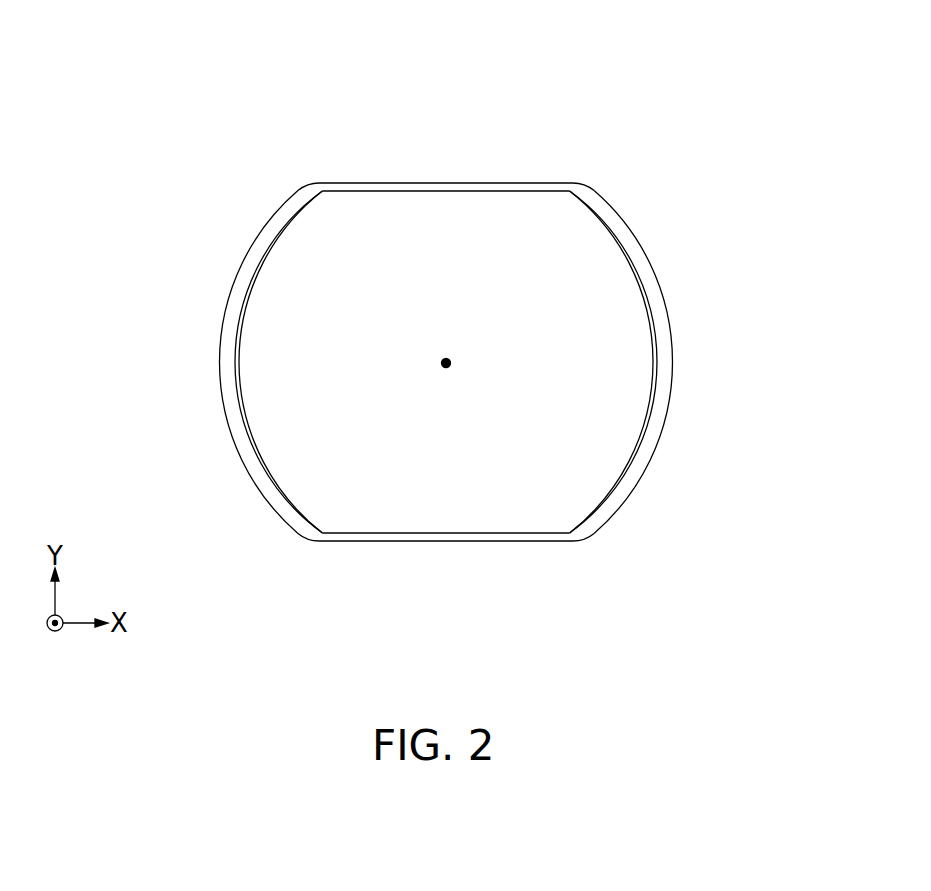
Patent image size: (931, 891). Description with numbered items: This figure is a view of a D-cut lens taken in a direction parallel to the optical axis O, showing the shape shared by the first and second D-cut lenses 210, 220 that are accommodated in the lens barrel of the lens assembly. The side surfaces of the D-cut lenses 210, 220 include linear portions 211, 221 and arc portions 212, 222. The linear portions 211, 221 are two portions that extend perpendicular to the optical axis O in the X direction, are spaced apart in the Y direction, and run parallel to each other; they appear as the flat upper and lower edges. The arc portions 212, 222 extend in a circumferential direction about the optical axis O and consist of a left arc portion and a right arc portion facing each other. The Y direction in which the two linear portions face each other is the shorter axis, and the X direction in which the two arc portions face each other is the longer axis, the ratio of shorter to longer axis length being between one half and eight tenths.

The first D-cut lens 210 is at (447, 332).
The second D-cut lens 220 is at (447, 332).
The linear portion 211 is at (446, 362).
The linear portion 221 is at (483, 183).
The arc portion 212 is at (447, 362).
The arc portion 222 is at (220, 365).
The optical axis O is at (446, 367).